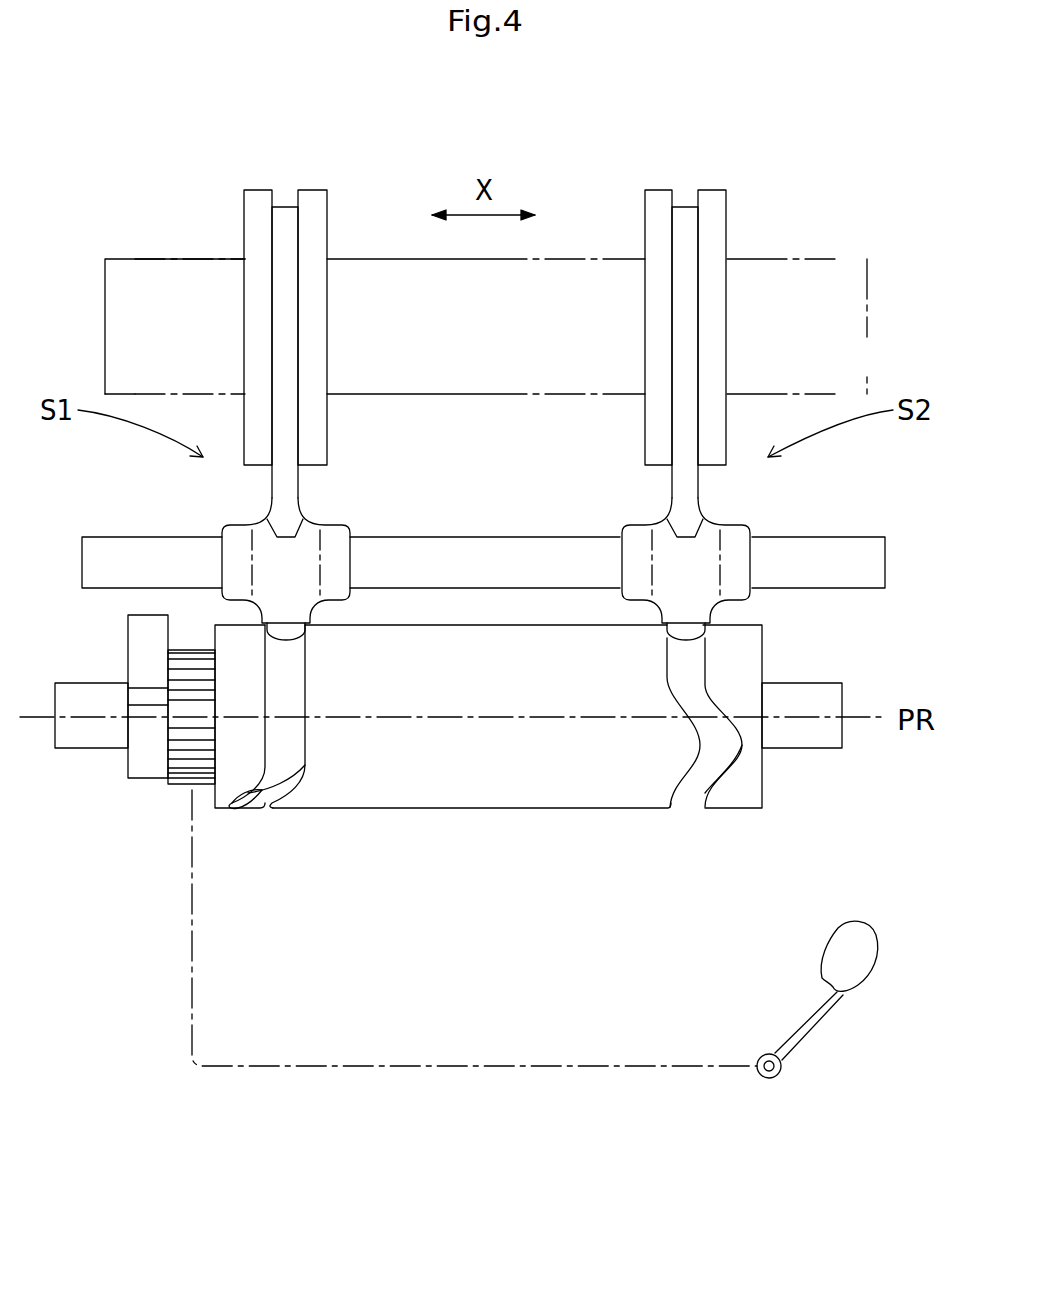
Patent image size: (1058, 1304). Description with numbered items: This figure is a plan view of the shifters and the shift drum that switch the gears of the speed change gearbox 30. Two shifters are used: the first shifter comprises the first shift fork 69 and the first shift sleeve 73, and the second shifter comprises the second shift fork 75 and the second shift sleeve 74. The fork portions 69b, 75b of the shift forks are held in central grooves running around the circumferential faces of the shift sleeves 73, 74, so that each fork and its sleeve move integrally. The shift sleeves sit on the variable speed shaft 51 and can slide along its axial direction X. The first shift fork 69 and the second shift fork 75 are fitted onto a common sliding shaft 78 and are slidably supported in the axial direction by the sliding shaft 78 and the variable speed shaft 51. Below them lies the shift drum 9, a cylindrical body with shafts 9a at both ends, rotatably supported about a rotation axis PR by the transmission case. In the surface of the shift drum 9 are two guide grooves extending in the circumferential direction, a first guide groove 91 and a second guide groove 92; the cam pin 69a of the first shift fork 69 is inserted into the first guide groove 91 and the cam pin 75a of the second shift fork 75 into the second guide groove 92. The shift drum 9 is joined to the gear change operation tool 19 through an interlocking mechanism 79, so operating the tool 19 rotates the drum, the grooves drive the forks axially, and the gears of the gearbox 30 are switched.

The speed change gearbox 30 is at (781, 130).
The variable speed shaft 51 is at (135, 258).
The first shift sleeve 73 is at (253, 220).
The second shift sleeve 74 is at (717, 220).
The sliding shaft 78 is at (105, 548).
The first shift fork 69 is at (308, 528).
The cam pin of the first shift fork 69a is at (287, 632).
The fork portion of the first shift fork 69b is at (282, 474).
The second shift fork 75 is at (665, 530).
The cam pin of the second shift fork 75a is at (684, 633).
The fork portion of the second shift fork 75b is at (690, 474).
The shift drum 9 is at (510, 828).
The shafts of the shift drum 9a is at (77, 690).
The first guide groove 91 is at (280, 768).
The second guide groove 92 is at (687, 793).
The interlocking mechanism 79 is at (415, 1070).
The gear change operation tool 19 is at (860, 932).